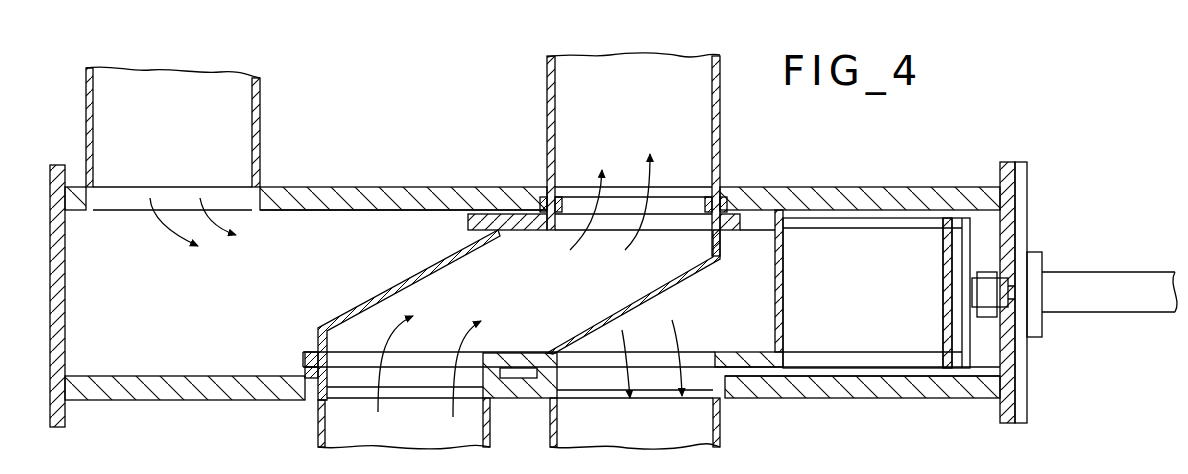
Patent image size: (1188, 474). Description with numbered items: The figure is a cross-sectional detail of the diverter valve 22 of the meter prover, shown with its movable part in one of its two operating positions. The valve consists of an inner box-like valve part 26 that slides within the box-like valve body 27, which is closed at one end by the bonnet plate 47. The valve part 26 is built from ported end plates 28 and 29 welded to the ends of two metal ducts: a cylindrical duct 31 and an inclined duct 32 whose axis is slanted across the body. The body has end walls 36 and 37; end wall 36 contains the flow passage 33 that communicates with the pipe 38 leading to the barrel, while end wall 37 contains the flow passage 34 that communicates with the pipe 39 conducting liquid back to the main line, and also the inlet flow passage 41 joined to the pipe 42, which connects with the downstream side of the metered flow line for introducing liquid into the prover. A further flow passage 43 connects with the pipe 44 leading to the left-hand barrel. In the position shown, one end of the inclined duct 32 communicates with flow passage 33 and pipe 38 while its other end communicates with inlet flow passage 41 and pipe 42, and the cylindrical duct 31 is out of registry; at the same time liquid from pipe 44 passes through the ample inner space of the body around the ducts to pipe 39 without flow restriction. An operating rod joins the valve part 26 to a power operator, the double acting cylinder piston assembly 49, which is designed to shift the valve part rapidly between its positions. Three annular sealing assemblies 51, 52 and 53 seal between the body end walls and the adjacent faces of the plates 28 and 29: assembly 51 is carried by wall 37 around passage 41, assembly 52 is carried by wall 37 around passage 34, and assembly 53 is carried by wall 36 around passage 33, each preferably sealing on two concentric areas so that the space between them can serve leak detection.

The valve housing 22 is at (879, 185).
The valve part 26 is at (744, 257).
The valve body 27 is at (341, 186).
The ported end plate 28 is at (740, 223).
The ported end plate 29 is at (530, 366).
The cylindrical duct 31 is at (902, 253).
The inclined duct 32 is at (415, 296).
The flow passage 33 is at (612, 203).
The flow passage 34 is at (693, 386).
The end wall 36 is at (390, 212).
The end wall 37 is at (200, 402).
The pipe 38 is at (563, 64).
The pipe 39 is at (716, 438).
The inlet flow passage 41 is at (467, 378).
The pipe 42 is at (348, 432).
The flow passage 43 is at (142, 200).
The pipe 44 is at (215, 88).
The bonnet plate 47 is at (1030, 372).
The double acting cylinder piston assembly 49 is at (1127, 272).
The sealing assembly 51 is at (327, 373).
The sealing assembly 52 is at (708, 368).
The sealing assembly 53 is at (556, 205).